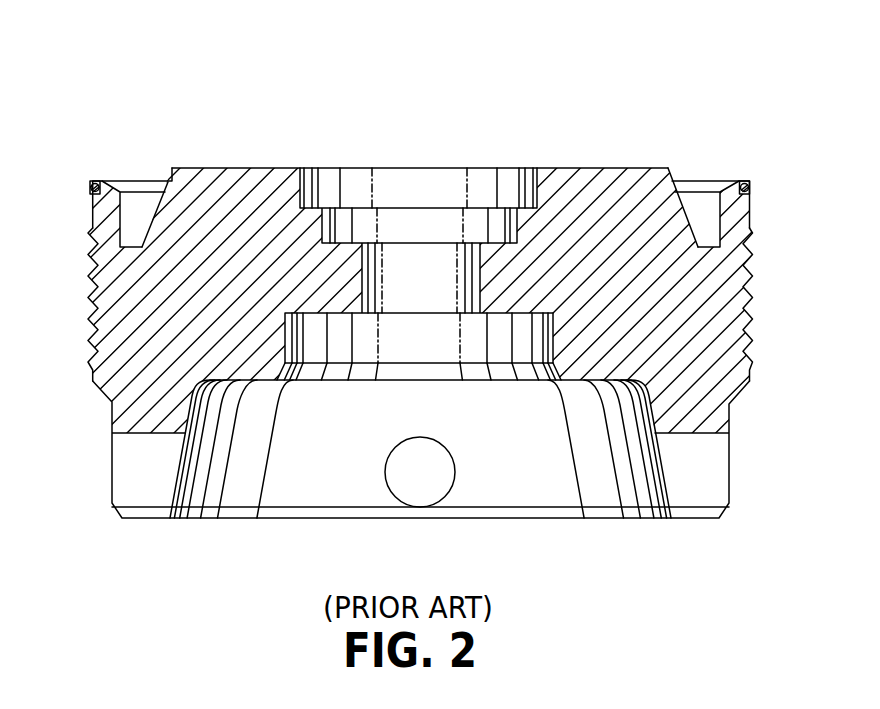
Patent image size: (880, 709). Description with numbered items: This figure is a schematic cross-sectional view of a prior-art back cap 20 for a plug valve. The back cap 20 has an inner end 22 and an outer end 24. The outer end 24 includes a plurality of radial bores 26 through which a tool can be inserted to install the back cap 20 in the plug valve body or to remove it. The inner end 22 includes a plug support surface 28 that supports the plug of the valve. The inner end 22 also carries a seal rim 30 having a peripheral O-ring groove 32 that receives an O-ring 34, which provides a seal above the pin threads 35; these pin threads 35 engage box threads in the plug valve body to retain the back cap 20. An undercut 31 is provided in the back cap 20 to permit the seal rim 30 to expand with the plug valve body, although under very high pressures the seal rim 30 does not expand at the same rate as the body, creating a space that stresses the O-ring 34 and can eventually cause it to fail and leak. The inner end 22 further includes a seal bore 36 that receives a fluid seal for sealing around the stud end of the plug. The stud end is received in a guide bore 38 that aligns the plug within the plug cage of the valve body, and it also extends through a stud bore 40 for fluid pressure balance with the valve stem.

The back cap 20 is at (205, 530).
The inner end 22 is at (497, 162).
The outer end 24 is at (539, 520).
The radial bores 26 is at (112, 468).
The plug support surface 28 is at (597, 167).
The seal rim 30 is at (130, 247).
The undercut 31 is at (134, 247).
The O-ring groove 32 is at (750, 181).
The O-ring 34 is at (95, 180).
The pin threads 35 is at (86, 287).
The seal bore 36 is at (332, 172).
The guide bore 38 is at (382, 213).
The stud bore 40 is at (425, 255).